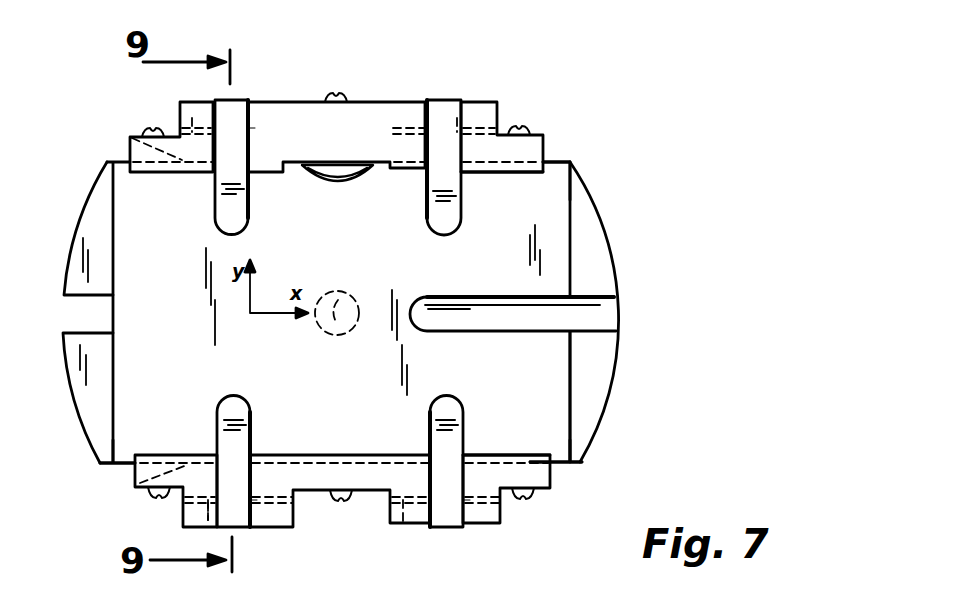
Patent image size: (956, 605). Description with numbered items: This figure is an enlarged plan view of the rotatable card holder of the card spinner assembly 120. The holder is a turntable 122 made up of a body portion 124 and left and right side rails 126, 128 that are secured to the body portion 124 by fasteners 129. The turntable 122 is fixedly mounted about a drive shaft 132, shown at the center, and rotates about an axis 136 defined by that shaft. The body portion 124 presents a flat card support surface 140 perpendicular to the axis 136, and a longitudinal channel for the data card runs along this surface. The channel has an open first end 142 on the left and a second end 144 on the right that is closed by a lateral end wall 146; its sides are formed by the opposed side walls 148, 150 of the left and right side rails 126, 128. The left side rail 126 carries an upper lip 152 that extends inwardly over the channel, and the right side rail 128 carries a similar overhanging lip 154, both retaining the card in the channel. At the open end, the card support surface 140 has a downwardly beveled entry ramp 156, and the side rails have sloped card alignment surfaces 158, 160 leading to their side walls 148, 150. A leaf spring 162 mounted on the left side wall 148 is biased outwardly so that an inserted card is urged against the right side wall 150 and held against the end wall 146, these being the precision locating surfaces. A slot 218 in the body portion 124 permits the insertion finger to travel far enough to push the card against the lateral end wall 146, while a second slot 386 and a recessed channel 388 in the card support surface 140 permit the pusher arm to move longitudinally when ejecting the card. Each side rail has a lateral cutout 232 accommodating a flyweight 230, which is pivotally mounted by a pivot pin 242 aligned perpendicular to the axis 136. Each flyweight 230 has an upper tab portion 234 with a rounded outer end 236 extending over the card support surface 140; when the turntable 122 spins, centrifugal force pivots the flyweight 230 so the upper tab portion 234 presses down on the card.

The card spinner assembly 120 is at (584, 55).
The turntable 122 is at (568, 160).
The body portion 124 is at (590, 195).
The left side rail 126 is at (393, 127).
The right side rail 128 is at (378, 474).
The fasteners 129 is at (143, 128).
The drive shaft 132 is at (358, 288).
The axis 136 is at (336, 322).
The card support surface 140 is at (184, 304).
The first end 142 is at (117, 446).
The second end 144 is at (570, 438).
The lateral end wall 146 is at (573, 378).
The left side wall 148 is at (520, 165).
The right side wall 150 is at (497, 460).
The upper lip 152 is at (497, 174).
The overhanging lip 154 is at (482, 452).
The entry ramp 156 is at (72, 380).
The card alignment surface 158 is at (150, 153).
The card alignment surface 160 is at (157, 462).
The leaf spring 162 is at (330, 183).
The slot 218 is at (76, 306).
The flyweight 230 is at (243, 95).
The lateral cutout 232 is at (252, 128).
The upper tab portion 234 is at (250, 205).
The rounded outer end 236 is at (246, 238).
The pivot pin 242 is at (190, 105).
The slot 386 is at (613, 303).
The recessed channel 388 is at (448, 312).